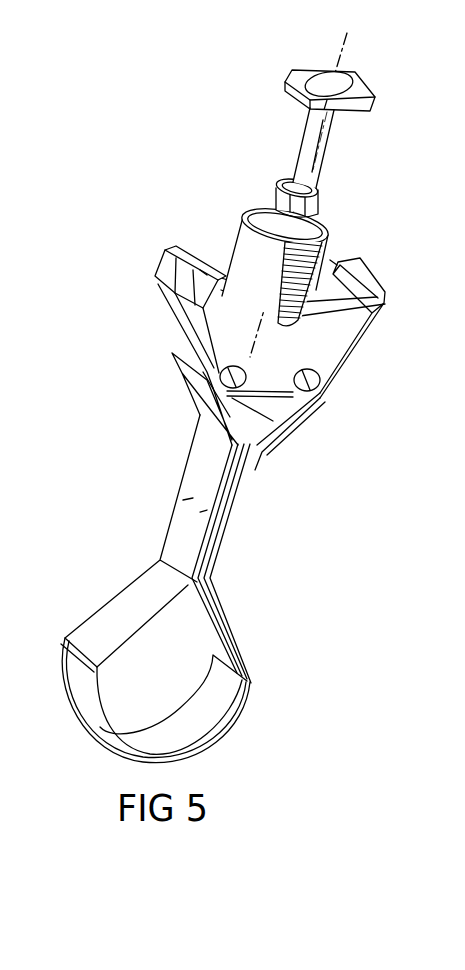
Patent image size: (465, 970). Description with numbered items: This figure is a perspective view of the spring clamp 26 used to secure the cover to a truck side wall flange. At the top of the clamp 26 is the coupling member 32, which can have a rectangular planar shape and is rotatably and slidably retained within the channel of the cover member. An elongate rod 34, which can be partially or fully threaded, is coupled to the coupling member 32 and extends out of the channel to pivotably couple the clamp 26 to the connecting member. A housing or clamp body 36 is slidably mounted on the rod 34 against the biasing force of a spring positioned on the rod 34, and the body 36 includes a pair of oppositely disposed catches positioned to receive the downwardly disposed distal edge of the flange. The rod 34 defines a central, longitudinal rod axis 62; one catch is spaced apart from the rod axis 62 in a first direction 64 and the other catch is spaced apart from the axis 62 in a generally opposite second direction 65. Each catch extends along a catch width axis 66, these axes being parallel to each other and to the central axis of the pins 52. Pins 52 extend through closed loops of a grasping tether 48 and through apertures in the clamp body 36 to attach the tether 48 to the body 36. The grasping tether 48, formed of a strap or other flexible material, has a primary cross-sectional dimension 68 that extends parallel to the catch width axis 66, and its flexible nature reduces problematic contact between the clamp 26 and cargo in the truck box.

The spring clamp 26 is at (222, 202).
The coupling member 32 is at (363, 92).
The rod 34 is at (320, 148).
The clamp body 36 is at (340, 347).
The grasping tether 48 is at (174, 466).
The pins 52 is at (317, 392).
The rod axis 62 is at (335, 46).
The first direction 64 is at (150, 265).
The second direction 65 is at (434, 277).
The catch width axis 66 is at (213, 272).
The primary cross-sectional dimension 68 is at (207, 511).